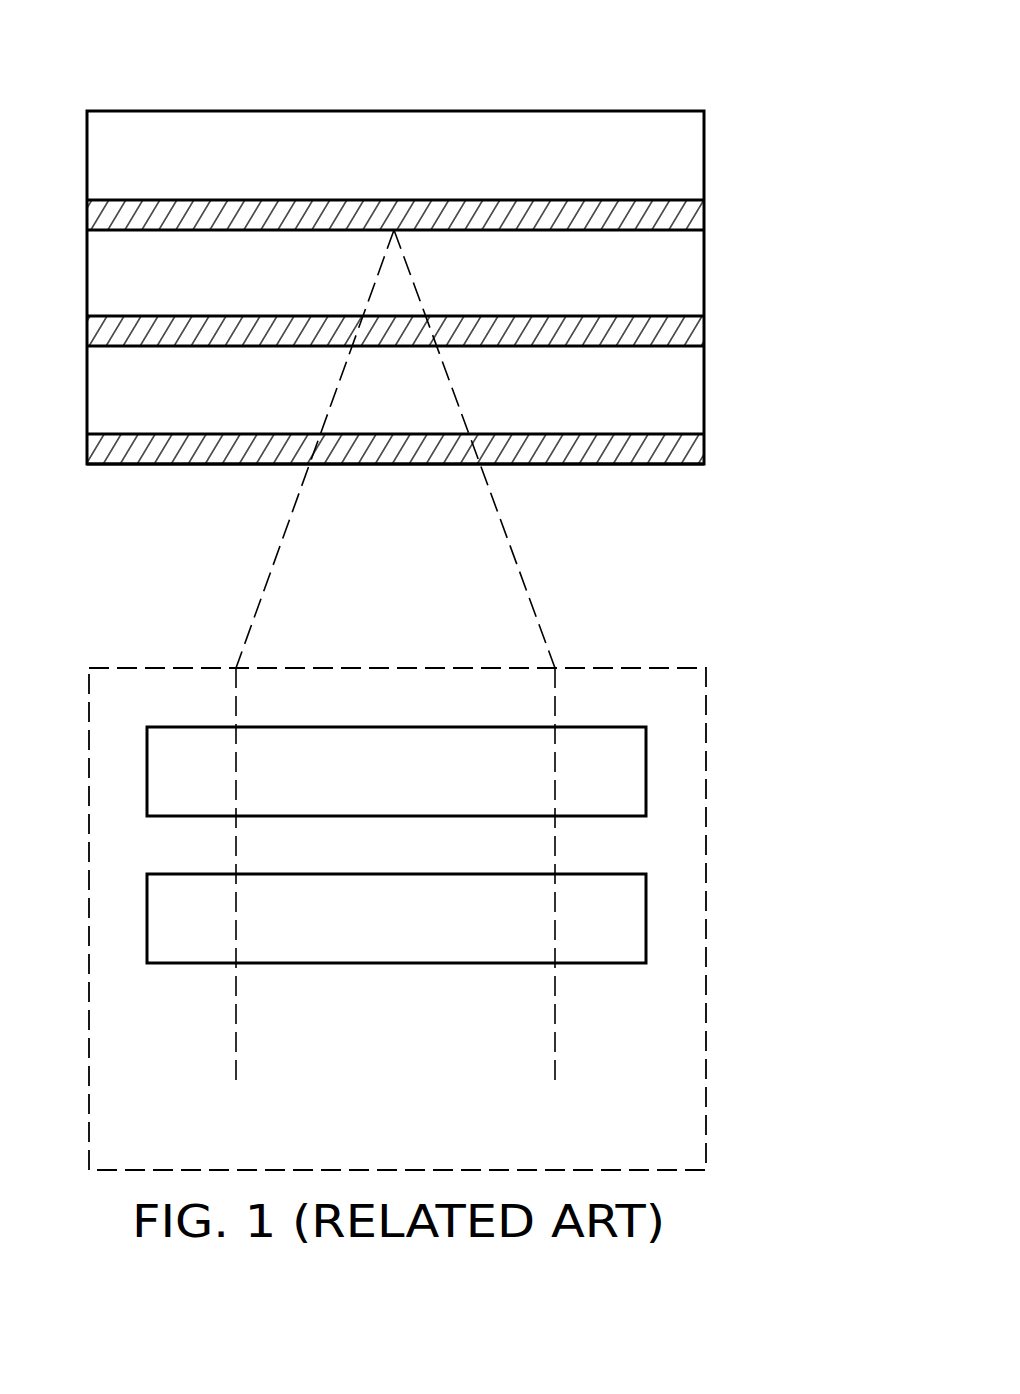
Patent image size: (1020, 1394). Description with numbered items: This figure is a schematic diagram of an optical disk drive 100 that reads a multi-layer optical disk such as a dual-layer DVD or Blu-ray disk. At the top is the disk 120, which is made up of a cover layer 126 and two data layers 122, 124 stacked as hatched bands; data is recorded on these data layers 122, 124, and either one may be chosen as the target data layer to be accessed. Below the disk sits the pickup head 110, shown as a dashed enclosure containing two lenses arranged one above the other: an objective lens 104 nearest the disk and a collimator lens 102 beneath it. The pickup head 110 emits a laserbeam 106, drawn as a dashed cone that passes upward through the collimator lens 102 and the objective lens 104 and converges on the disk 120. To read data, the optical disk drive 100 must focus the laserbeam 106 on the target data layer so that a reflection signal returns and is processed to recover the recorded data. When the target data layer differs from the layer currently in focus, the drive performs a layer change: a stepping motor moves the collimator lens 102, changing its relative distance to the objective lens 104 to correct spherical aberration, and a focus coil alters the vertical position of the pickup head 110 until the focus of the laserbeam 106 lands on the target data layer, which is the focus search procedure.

The optical disk drive 100 is at (612, 51).
The disk 120 is at (677, 110).
The data layer 122 is at (705, 212).
The data layer 124 is at (705, 330).
The cover layer 126 is at (705, 448).
The pickup head 110 is at (706, 697).
The objective lens 104 is at (646, 768).
The collimator lens 102 is at (646, 917).
The laserbeam 106 is at (556, 1022).